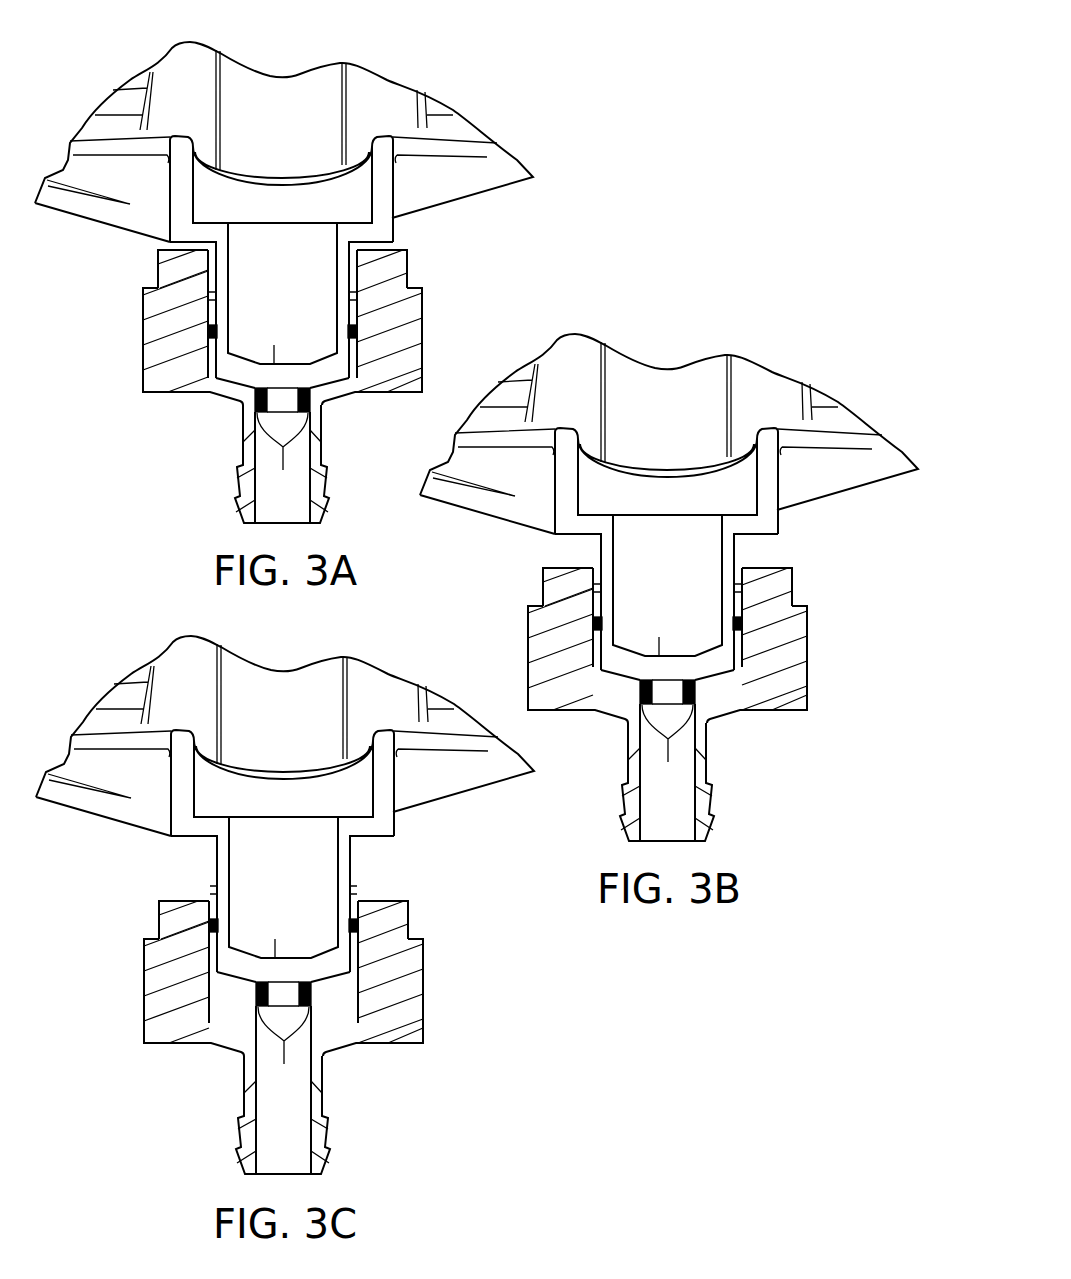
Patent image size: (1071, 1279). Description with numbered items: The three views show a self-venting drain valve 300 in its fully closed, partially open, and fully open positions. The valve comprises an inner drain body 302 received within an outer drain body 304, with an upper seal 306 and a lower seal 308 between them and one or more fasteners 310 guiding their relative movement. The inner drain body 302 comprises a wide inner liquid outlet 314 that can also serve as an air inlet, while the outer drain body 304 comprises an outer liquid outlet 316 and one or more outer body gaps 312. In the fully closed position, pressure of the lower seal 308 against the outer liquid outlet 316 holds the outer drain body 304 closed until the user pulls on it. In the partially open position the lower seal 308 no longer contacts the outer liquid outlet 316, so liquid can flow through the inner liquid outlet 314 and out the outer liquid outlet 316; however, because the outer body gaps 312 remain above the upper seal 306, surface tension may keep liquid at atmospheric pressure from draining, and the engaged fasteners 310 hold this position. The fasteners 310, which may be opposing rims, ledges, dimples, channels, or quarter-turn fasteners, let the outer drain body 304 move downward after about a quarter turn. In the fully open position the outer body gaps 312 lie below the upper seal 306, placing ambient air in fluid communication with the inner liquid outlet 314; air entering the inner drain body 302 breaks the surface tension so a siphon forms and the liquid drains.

In FIG. 3A, the self-venting drain valve 300 is at (76, 67).
In FIG. 3B, the self-venting drain valve 300 is at (613, 305).
In FIG. 3C, the self-venting drain valve 300 is at (105, 648).
In FIG. 3A, the inner drain body 302 is at (225, 272).
In FIG. 3B, the inner drain body 302 is at (608, 558).
In FIG. 3C, the inner drain body 302 is at (225, 857).
In FIG. 3A, the outer drain body 304 is at (152, 382).
In FIG. 3B, the outer drain body 304 is at (537, 673).
In FIG. 3C, the outer drain body 304 is at (152, 1008).
In FIG. 3A, the upper seal 306 is at (208, 331).
In FIG. 3B, the upper seal 306 is at (593, 625).
In FIG. 3C, the upper seal 306 is at (207, 932).
In FIG. 3A, the lower seal 308 is at (282, 455).
In FIG. 3B, the lower seal 308 is at (667, 760).
In FIG. 3C, the lower seal 308 is at (283, 1078).
In FIG. 3A, the fasteners 310 is at (207, 292).
In FIG. 3B, the fasteners 310 is at (598, 585).
In FIG. 3C, the fasteners 310 is at (217, 892).
In FIG. 3A, the outer body gaps 312 is at (208, 300).
In FIG. 3B, the outer body gaps 312 is at (593, 598).
In FIG. 3C, the outer body gaps 312 is at (208, 962).
In FIG. 3A, the inner liquid outlet 314 is at (300, 352).
In FIG. 3B, the inner liquid outlet 314 is at (687, 642).
In FIG. 3C, the inner liquid outlet 314 is at (300, 947).
In FIG. 3A, the outer liquid outlet 316 is at (265, 497).
In FIG. 3B, the outer liquid outlet 316 is at (652, 788).
In FIG. 3C, the outer liquid outlet 316 is at (265, 1118).